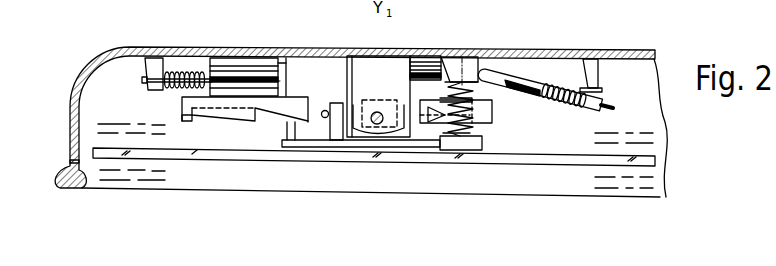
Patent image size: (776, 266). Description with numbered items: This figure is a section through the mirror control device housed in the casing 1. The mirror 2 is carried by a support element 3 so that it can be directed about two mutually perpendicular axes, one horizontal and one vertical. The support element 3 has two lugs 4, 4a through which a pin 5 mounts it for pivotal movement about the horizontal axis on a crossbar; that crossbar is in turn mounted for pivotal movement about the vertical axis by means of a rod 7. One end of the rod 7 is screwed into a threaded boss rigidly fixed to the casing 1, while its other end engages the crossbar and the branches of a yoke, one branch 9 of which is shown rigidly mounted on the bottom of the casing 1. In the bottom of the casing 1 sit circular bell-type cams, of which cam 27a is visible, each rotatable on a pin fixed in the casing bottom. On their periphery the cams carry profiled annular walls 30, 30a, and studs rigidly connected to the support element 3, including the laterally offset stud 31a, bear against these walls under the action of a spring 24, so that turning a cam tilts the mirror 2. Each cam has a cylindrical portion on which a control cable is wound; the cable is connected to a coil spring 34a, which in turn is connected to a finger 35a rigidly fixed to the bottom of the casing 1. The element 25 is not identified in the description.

The casing 1 is at (517, 59).
The mirror 2 is at (528, 160).
The support element 3 is at (380, 140).
The lug 4 is at (423, 101).
The lug 4a is at (335, 127).
The pin 5 is at (321, 115).
The rod 7 is at (378, 112).
The yoke branch 9 is at (370, 72).
The spring 24 is at (467, 80).
The friction plate stack 25 is at (446, 62).
The bell-type cam 27a is at (241, 95).
The profiled annular wall 30 is at (486, 110).
The profiled annular wall 30a is at (248, 115).
The stud 31a is at (293, 123).
The coil spring 34a is at (187, 75).
The finger 35a is at (157, 72).